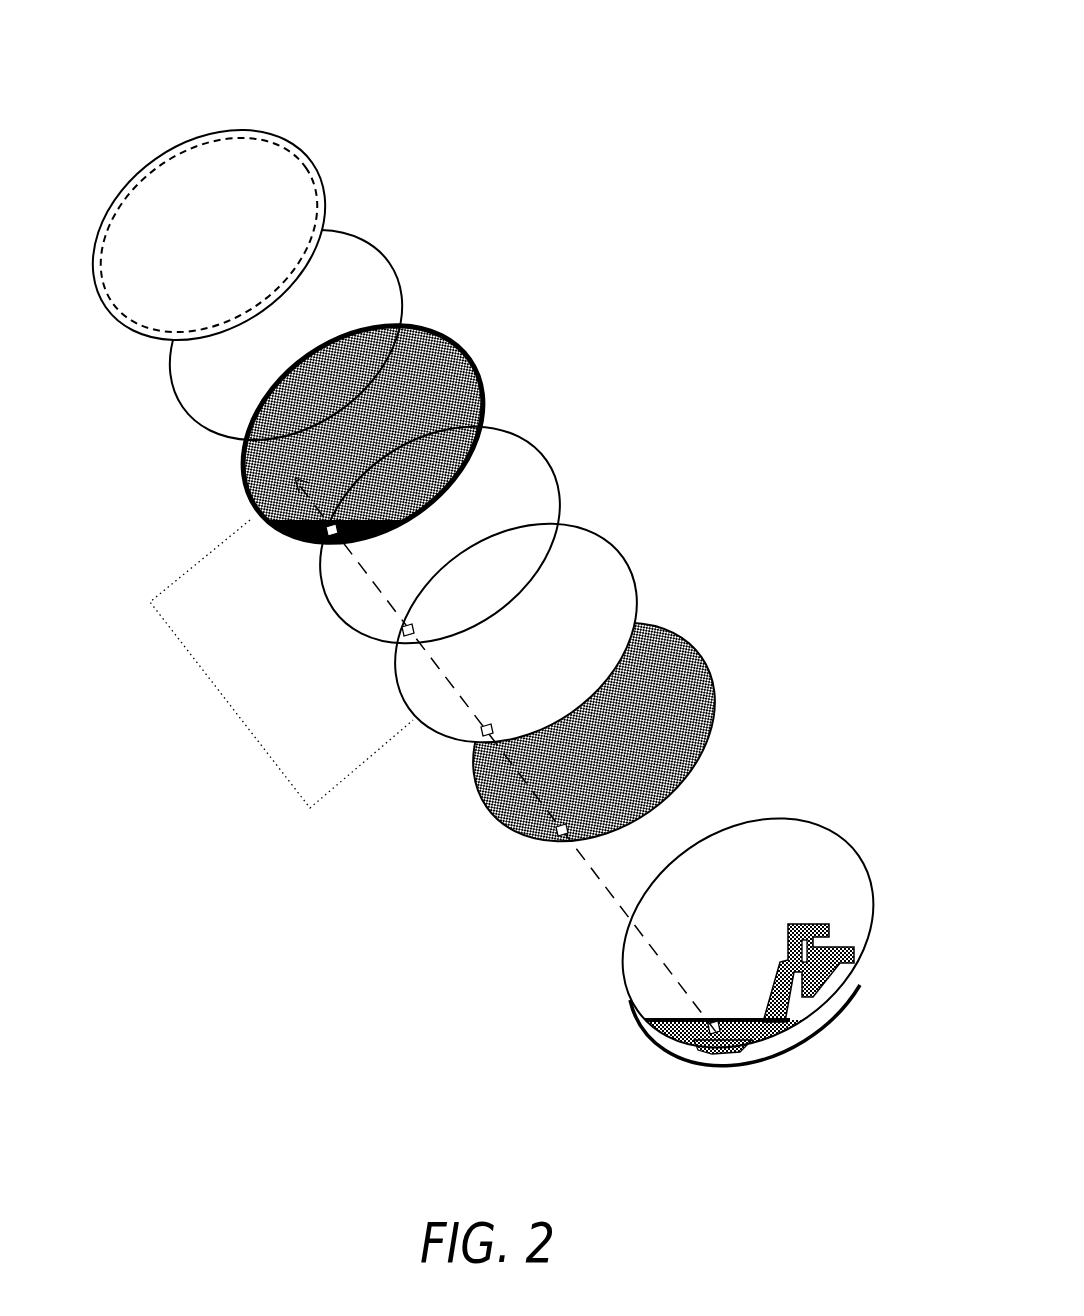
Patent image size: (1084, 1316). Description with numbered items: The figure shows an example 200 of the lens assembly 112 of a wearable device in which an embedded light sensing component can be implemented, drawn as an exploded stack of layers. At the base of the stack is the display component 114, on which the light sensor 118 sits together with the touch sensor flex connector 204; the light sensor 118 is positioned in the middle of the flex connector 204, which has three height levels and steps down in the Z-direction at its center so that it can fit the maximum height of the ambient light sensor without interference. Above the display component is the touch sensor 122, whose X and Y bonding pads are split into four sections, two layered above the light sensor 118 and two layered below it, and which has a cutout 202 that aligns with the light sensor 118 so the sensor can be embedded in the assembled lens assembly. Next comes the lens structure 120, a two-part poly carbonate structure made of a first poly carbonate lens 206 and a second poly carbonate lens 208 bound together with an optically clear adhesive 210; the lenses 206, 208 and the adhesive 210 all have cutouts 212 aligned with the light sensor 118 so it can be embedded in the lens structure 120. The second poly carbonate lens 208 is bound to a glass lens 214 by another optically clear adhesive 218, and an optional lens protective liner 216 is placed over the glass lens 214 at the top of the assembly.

The example 200 is at (702, 56).
The lens assembly 112 is at (702, 373).
The display component 114 is at (780, 835).
The light sensor 118 is at (707, 1045).
The lens structure 120 is at (211, 730).
The touch sensor 122 is at (682, 630).
The cutout 202 is at (558, 838).
The touch sensor flex connector 204 is at (768, 1034).
The first poly carbonate lens 206 is at (607, 532).
The second poly carbonate lens 208 is at (472, 353).
The optically clear adhesive 210 is at (527, 433).
The cutouts 212 is at (326, 540).
The glass lens 214 is at (313, 163).
The lens protective liner 216 is at (243, 137).
The optically clear adhesive 218 is at (388, 260).